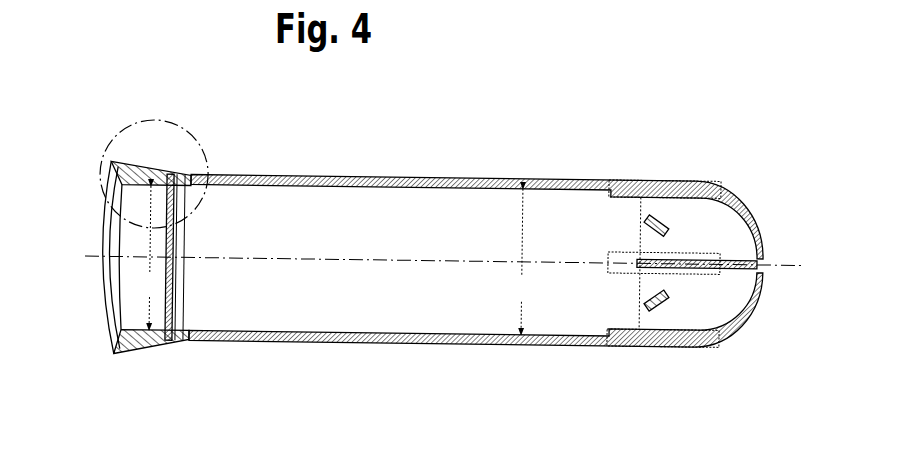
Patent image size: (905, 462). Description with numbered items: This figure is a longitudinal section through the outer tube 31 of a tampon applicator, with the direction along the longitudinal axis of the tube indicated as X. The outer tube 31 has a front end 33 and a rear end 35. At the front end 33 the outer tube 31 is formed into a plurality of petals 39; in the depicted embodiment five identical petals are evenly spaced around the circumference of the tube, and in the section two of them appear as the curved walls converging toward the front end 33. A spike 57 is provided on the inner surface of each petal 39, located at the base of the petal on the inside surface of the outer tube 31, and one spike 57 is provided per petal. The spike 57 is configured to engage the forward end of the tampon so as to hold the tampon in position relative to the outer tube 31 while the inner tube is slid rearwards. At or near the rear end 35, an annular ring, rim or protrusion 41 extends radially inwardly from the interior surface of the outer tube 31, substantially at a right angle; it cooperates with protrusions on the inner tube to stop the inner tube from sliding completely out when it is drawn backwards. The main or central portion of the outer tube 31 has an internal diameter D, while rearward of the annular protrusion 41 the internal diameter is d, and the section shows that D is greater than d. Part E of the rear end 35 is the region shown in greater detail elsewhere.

The outer tube 31 is at (367, 341).
The front end 33 is at (762, 268).
The rear end 35 is at (102, 322).
The petals 39 is at (745, 226).
The annular protrusion 41 is at (175, 173).
The spike 57 is at (662, 211).
The part E is at (203, 151).
The longitudinal axis direction X is at (427, 256).
The internal diameter D is at (522, 262).
The internal diameter d is at (148, 258).